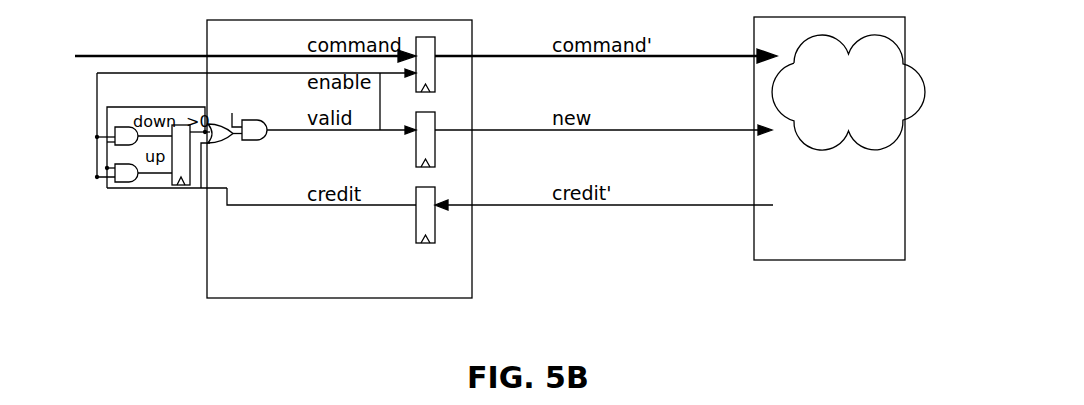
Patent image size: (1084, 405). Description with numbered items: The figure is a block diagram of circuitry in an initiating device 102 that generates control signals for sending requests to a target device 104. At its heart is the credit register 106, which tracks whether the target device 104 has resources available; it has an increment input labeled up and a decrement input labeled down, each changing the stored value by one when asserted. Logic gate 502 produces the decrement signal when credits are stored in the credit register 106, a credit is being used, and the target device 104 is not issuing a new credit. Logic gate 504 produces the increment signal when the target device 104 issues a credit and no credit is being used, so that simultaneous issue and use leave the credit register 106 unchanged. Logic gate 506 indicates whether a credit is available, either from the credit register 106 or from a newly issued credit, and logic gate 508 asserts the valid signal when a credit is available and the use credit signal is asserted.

The initiating device 102 is at (339, 159).
The target device 104 is at (860, 138).
The credit register 106 is at (180, 148).
The logic gate 502 is at (113, 132).
The logic gate 504 is at (113, 170).
The logic gate 506 is at (220, 143).
The logic gate 508 is at (258, 118).